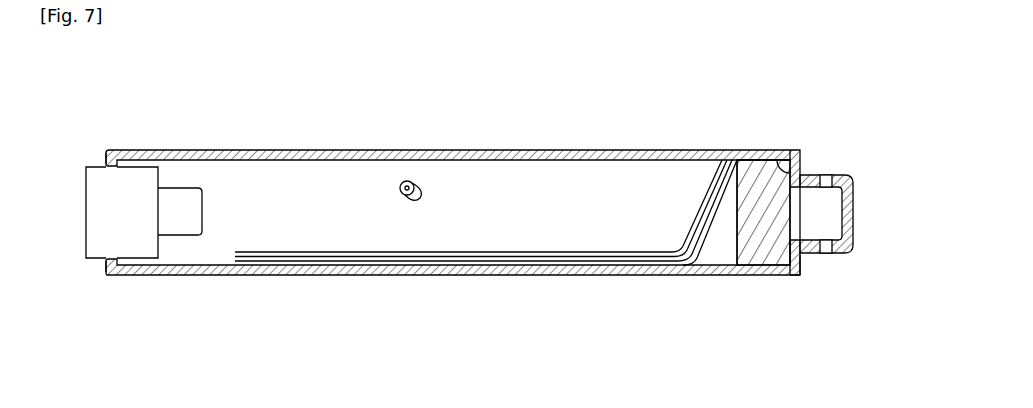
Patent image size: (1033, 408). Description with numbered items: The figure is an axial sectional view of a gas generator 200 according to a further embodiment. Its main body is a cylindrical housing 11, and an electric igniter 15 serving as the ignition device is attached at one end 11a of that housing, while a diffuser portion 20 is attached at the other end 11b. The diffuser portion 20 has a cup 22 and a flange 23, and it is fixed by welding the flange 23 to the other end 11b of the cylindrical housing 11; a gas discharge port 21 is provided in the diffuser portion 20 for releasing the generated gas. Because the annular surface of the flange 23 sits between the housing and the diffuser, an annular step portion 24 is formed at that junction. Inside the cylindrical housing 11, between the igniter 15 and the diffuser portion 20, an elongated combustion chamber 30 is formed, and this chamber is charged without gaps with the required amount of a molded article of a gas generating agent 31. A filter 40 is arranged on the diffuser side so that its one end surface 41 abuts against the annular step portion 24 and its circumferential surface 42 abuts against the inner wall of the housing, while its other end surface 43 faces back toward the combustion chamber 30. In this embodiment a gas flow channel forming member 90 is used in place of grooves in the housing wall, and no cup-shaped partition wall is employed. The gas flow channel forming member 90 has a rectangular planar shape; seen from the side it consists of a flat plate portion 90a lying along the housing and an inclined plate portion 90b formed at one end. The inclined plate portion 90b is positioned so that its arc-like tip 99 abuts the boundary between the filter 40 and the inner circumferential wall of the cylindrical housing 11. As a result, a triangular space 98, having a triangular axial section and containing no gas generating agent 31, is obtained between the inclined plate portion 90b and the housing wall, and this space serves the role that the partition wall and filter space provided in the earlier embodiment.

The gas generator 200 is at (462, 134).
The cylindrical housing 11 is at (538, 150).
The one end of cylindrical housing 11a is at (107, 268).
The other end of cylindrical housing 11b is at (793, 275).
The electric igniter 15 is at (109, 222).
The combustion chamber 30 is at (316, 214).
The gas generating agent 31 is at (420, 190).
The gas flow channel forming member 90 is at (683, 200).
The flat plate portion 90a is at (601, 252).
The inclined plate portion 90b is at (690, 229).
The triangular space 98 is at (703, 257).
The arc-like tip 99 is at (734, 160).
The filter 40 is at (762, 260).
The circumferential surface 42 is at (758, 152).
The other end surface 43 is at (737, 238).
The annular step portion 24 is at (781, 152).
The flange 23 is at (799, 263).
The diffuser portion 20 is at (864, 192).
The gas discharge port 21 is at (826, 175).
The cup 22 is at (840, 175).
The one end surface 41 is at (792, 212).